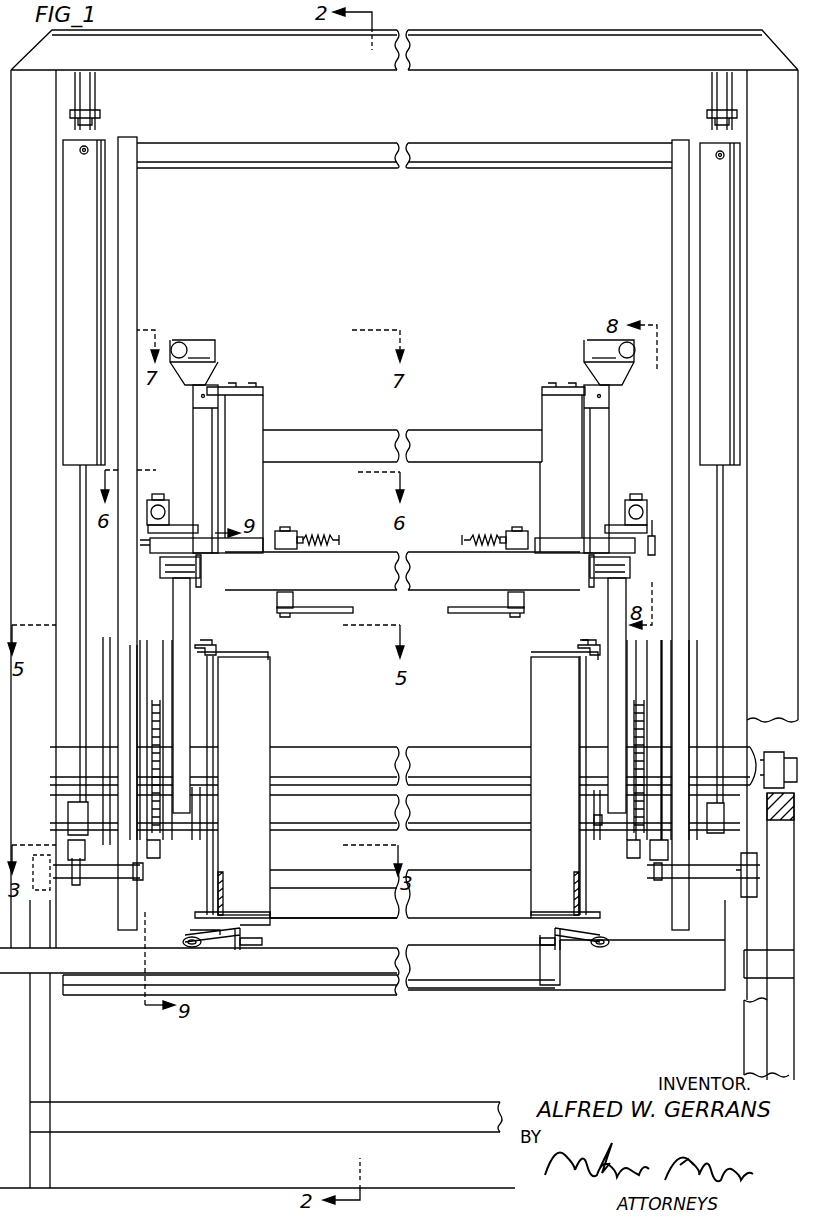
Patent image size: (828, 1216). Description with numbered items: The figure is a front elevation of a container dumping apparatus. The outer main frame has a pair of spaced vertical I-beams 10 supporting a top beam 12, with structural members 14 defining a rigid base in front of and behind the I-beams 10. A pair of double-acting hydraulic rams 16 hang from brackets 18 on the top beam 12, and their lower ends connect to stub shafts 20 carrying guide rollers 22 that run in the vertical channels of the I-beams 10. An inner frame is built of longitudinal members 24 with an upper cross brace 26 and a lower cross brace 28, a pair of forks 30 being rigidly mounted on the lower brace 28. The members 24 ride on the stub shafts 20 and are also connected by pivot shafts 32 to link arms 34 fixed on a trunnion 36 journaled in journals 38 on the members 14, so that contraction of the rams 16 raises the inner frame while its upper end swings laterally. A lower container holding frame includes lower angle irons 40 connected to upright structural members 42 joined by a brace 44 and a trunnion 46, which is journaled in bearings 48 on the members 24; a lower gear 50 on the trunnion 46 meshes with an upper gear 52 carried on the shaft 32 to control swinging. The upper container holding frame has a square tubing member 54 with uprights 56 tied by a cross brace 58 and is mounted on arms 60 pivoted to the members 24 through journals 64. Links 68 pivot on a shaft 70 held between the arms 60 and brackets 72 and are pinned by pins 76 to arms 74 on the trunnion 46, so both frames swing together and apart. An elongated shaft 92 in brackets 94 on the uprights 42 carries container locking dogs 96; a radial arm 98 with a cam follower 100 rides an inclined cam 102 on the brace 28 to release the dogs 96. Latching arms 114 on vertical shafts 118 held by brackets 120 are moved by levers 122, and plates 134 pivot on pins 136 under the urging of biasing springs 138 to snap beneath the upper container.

The I-beams 10 is at (38, 583).
The top beam 12 is at (486, 70).
The structural members 14 is at (353, 990).
The double-acting hydraulic rams 16 is at (96, 160).
The brackets 18 is at (92, 92).
The stub shafts 20 is at (143, 872).
The guide rollers 22 is at (48, 890).
The longitudinal members 24 is at (128, 272).
The upper cross brace 26 is at (323, 158).
The lower cross brace 28 is at (293, 994).
The forks 30 is at (262, 930).
The pivot shafts 32 is at (100, 630).
The link arms 34 is at (144, 640).
The trunnion 36 is at (328, 749).
The journals 38 is at (778, 752).
The lower angle irons 40 is at (223, 884).
The upright structural members 42 is at (262, 678).
The brace 44 is at (446, 896).
The trunnion 46 is at (293, 821).
The bearings 48 is at (138, 851).
The lower gear 50 is at (154, 838).
The upper gear 52 is at (160, 660).
The square tubing member 54 is at (370, 552).
The uprights 56 is at (255, 498).
The cross brace 58 is at (370, 432).
The arms 60 is at (158, 554).
The journals 64 is at (656, 528).
The links 68 is at (192, 600).
The shaft 70 is at (200, 565).
The brackets 72 is at (201, 583).
The arms 74 is at (186, 839).
The pins 76 is at (594, 832).
The elongated shaft 92 is at (212, 840).
The brackets 94 is at (582, 656).
The container locking dogs 96 is at (218, 644).
The radial arm 98 is at (195, 932).
The cam follower 100 is at (192, 948).
The inclined cam 102 is at (222, 940).
The arms 114 is at (200, 345).
The vertical shafts 118 is at (202, 443).
The brackets 120 is at (238, 394).
The levers 122 is at (180, 525).
The plates 134 is at (294, 614).
The pins 136 is at (286, 531).
The biasing springs 138 is at (330, 535).